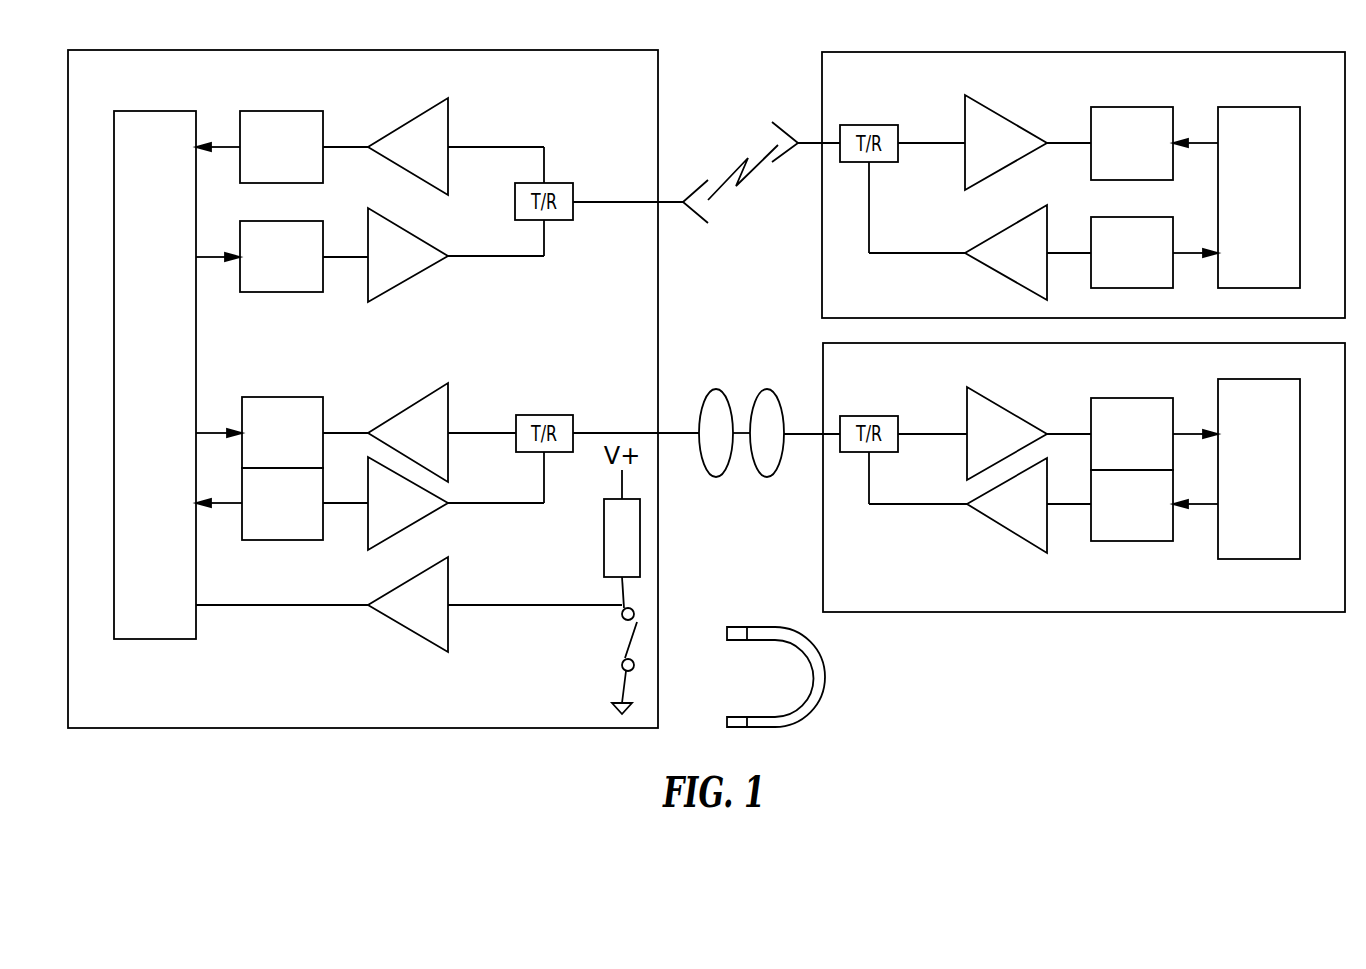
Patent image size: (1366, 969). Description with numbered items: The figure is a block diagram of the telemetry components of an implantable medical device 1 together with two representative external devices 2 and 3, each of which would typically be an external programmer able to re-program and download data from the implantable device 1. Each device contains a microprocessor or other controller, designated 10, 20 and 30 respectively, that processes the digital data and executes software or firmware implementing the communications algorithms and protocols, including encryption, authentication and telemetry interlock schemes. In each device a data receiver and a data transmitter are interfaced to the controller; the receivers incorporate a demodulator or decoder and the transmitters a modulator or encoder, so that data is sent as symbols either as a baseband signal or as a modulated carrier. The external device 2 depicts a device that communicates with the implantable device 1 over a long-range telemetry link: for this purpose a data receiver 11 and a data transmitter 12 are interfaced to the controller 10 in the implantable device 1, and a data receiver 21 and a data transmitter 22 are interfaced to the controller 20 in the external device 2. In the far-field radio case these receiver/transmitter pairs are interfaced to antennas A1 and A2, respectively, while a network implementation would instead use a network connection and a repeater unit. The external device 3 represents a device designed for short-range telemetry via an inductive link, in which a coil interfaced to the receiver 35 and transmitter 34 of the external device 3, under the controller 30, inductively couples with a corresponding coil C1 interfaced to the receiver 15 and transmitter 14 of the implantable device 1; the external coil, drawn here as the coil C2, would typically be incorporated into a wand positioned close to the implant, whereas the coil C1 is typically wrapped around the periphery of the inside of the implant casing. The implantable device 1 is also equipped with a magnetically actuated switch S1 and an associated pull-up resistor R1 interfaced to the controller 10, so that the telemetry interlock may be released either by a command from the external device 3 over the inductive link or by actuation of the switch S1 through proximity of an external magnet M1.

The implantable medical device 1 is at (363, 50).
The external device 2 is at (1083, 51).
The external device 3 is at (1085, 612).
The controller 10 is at (114, 378).
The data receiver 11 is at (236, 128).
The data transmitter 12 is at (238, 238).
The transmitter 14 is at (238, 485).
The receiver 15 is at (238, 413).
The controller 20 is at (1303, 201).
The data receiver 21 is at (1176, 122).
The data transmitter 22 is at (1176, 231).
The controller 30 is at (1303, 471).
The transmitter 34 is at (1176, 483).
The receiver 35 is at (1176, 413).
The antenna A1 is at (697, 192).
The antenna A2 is at (791, 152).
The coil C1 is at (716, 388).
The coil C2 is at (767, 388).
The pull-up resistor R1 is at (602, 540).
The magnetically actuated switch S1 is at (624, 637).
The external magnet M1 is at (826, 680).